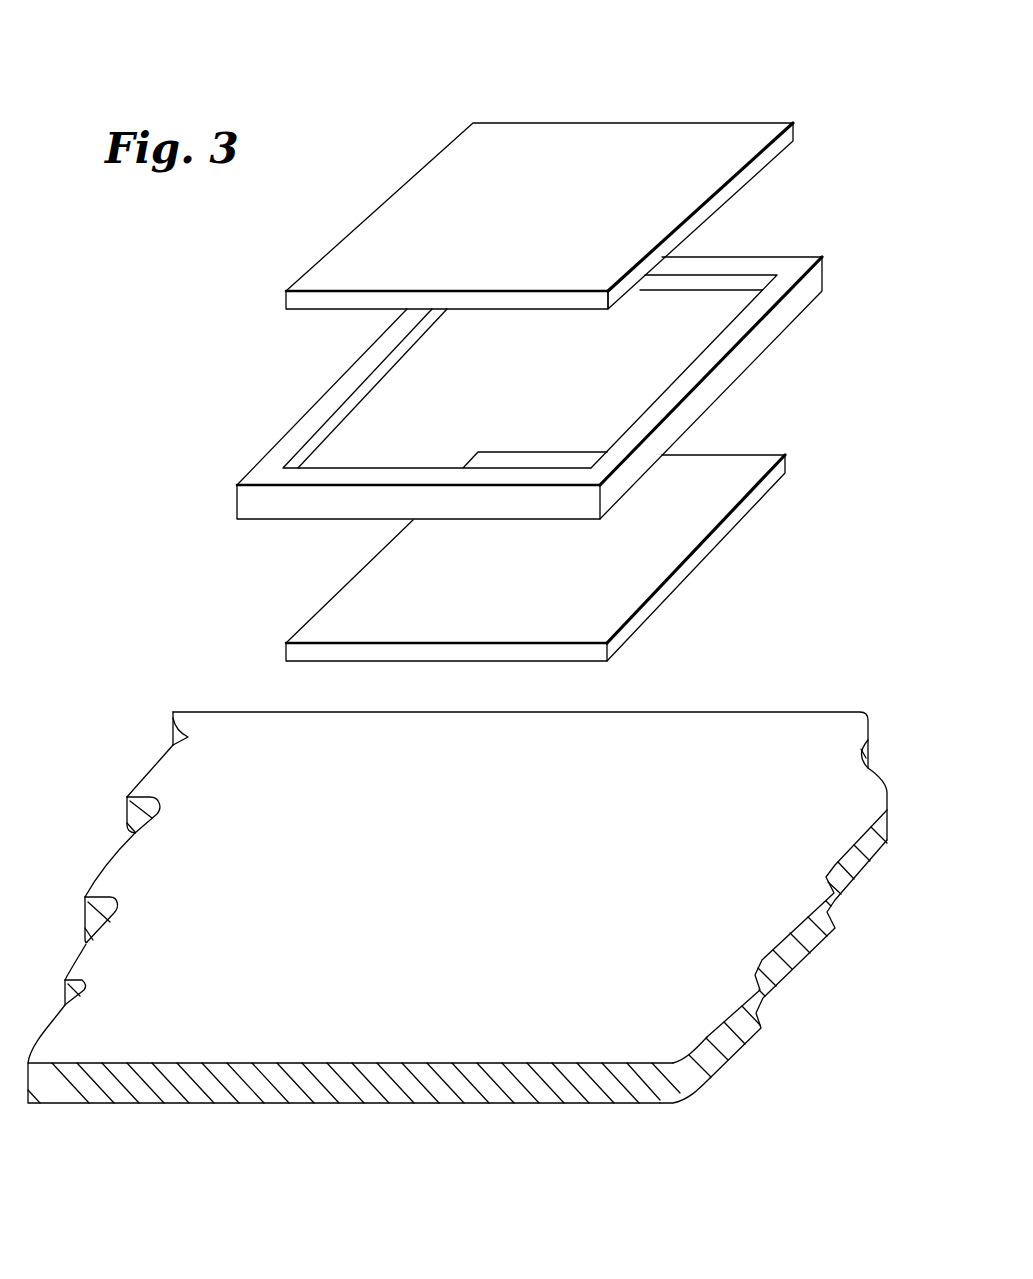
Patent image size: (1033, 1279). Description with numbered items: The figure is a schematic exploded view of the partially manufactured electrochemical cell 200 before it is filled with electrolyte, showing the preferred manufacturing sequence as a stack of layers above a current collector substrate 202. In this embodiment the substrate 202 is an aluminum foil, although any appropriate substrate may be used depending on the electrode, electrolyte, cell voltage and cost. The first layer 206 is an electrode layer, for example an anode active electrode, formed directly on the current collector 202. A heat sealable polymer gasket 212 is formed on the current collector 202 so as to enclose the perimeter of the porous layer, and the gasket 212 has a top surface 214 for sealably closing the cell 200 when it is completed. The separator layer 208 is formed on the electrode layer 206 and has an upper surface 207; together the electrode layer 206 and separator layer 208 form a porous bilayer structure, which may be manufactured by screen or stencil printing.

The partially manufactured electrochemical cell 200 is at (755, 74).
The current collector substrate 202 is at (709, 737).
The first layer 206 is at (787, 455).
The upper surface 207 is at (576, 137).
The separator layer 208 is at (797, 126).
The gasket 212 is at (825, 268).
The top surface 214 is at (710, 264).